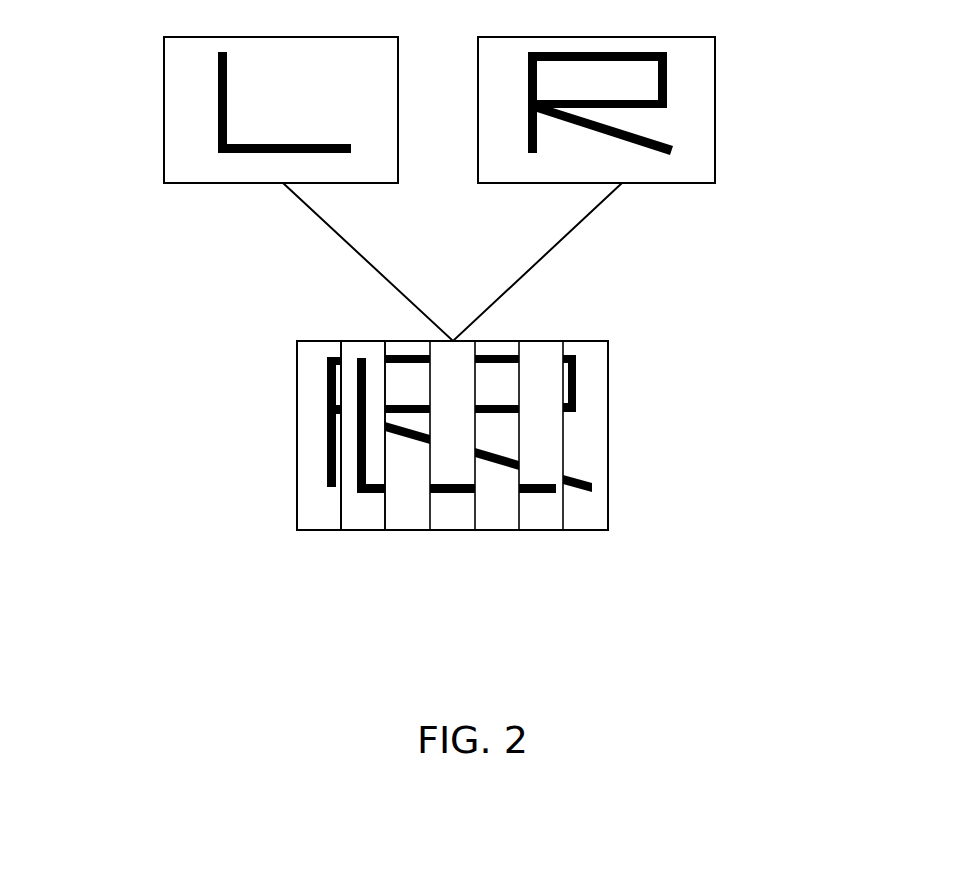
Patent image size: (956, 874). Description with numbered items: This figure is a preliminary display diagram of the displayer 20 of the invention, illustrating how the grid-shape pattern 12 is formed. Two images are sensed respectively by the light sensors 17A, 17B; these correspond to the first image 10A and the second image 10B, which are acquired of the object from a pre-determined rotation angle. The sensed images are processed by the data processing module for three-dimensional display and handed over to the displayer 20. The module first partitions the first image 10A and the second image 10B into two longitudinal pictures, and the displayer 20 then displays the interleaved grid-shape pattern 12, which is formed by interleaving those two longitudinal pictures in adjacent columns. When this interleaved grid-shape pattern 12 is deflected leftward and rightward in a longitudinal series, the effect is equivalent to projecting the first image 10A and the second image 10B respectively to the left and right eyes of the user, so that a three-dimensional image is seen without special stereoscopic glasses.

The light sensor 17A is at (164, 98).
The light sensor 17B is at (715, 87).
The interleaved grid-shape pattern 12 is at (608, 430).
The displayer 20 is at (297, 415).
The second image 10B is at (328, 518).
The first image 10A is at (369, 518).